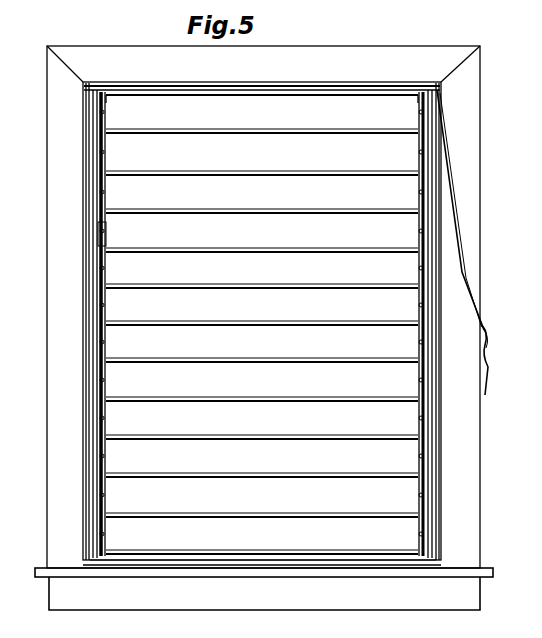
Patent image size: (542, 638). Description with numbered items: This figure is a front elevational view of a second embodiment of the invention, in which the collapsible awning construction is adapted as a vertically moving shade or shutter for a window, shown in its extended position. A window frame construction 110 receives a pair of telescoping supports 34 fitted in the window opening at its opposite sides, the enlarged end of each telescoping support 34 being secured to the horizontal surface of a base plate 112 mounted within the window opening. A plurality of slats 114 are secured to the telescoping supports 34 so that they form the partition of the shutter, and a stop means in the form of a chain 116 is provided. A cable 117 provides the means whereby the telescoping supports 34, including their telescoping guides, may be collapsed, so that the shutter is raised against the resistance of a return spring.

The window frame construction 110 is at (457, 149).
The base plate 112 is at (375, 86).
The telescoping support 34 is at (98, 141).
The chain 116 is at (104, 243).
The slats 114 is at (158, 514).
The cable 117 is at (463, 275).